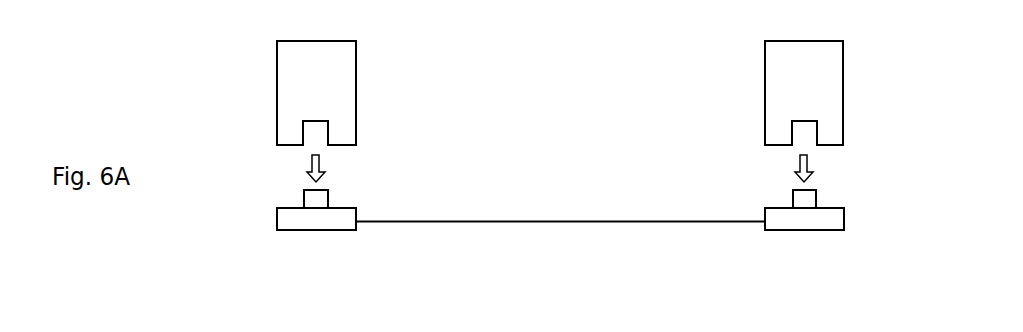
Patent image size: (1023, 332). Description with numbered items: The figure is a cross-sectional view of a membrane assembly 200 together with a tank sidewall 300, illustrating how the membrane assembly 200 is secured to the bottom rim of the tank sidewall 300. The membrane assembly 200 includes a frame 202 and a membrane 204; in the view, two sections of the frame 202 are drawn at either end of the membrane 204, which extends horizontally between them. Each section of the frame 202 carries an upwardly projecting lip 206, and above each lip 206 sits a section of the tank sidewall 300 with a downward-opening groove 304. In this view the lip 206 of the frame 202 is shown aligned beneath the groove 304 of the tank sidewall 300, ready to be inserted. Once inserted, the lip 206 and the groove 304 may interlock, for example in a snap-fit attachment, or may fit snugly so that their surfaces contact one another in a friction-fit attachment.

The membrane assembly 200 is at (902, 218).
The frame 202 is at (305, 222).
The membrane 204 is at (697, 222).
The lip 206 is at (312, 198).
The tank sidewall 300 is at (333, 83).
The groove 304 is at (316, 135).